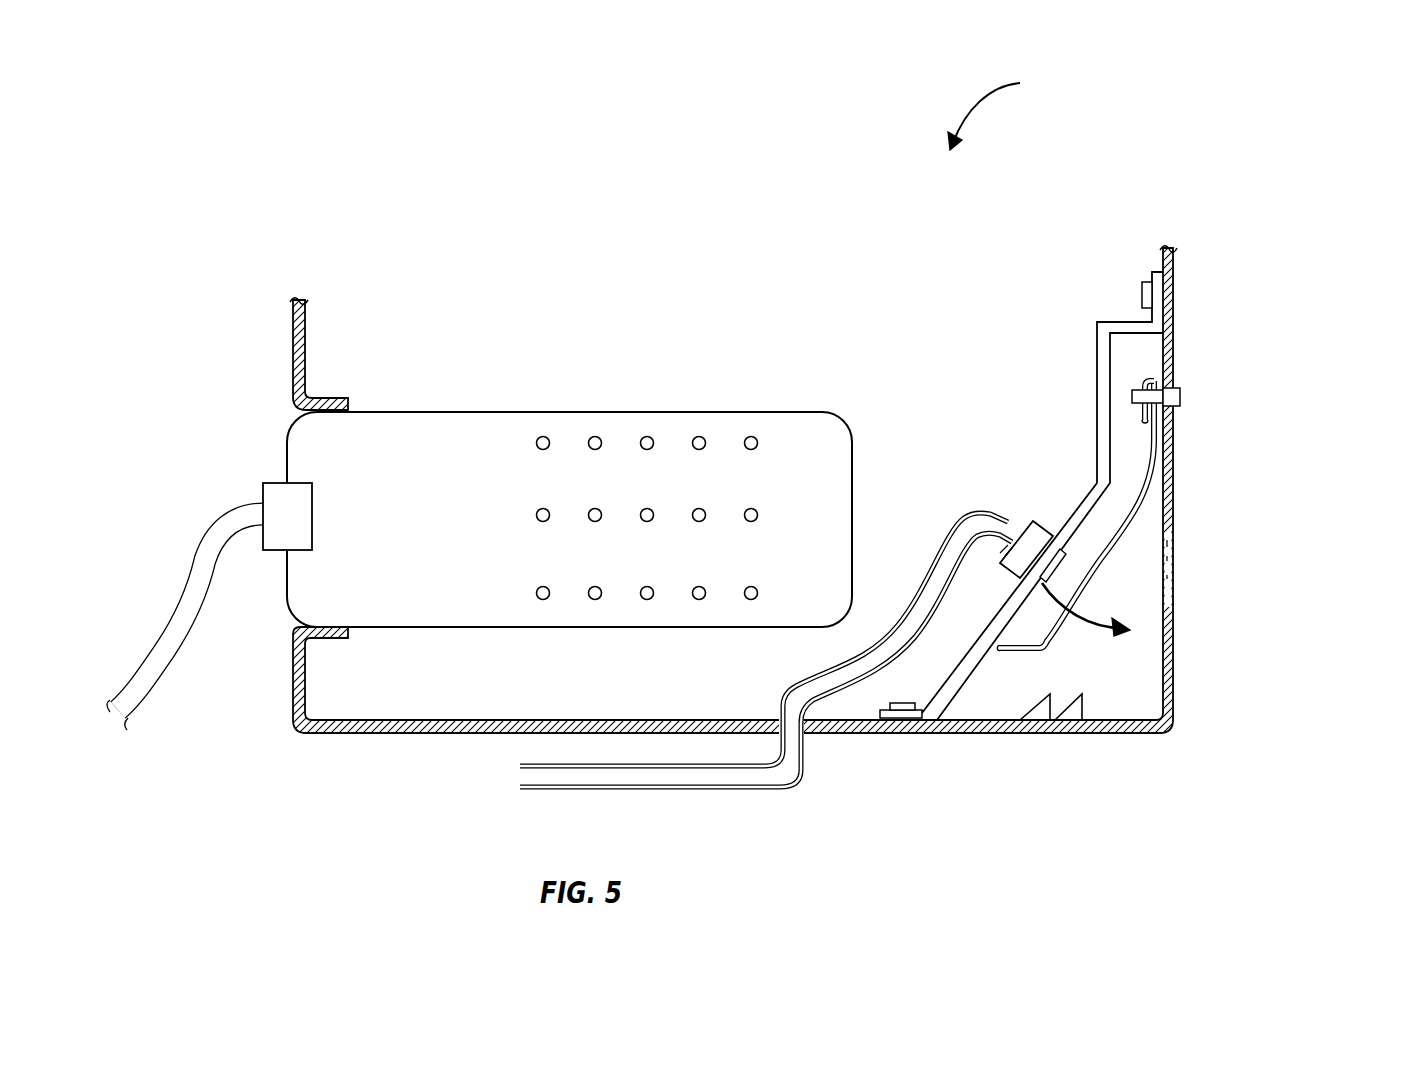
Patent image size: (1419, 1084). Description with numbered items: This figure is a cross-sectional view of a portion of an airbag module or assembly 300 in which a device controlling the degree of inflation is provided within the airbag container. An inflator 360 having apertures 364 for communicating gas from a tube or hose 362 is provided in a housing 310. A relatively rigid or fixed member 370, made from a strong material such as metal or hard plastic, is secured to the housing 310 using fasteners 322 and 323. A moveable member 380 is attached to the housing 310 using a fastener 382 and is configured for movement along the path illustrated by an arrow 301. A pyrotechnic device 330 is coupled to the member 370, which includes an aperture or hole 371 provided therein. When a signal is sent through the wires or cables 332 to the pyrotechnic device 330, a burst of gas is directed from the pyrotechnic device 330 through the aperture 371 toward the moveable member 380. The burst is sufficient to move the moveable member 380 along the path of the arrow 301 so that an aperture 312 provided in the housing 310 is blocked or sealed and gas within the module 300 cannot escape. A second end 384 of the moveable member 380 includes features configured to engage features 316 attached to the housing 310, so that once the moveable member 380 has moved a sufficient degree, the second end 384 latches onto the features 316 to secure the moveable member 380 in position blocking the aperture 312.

The airbag module or assembly 300 is at (1005, 108).
The arrow 301 is at (1082, 617).
The housing 310 is at (306, 330).
The aperture 312 is at (1168, 580).
The features 316 is at (1082, 706).
The fastener 322 is at (1140, 295).
The fastener 323 is at (908, 695).
The pyrotechnic device 330 is at (1040, 520).
The wires or cables 332 is at (933, 563).
The inflator 360 is at (515, 418).
The tube or hose 362 is at (172, 672).
The apertures 364 is at (536, 593).
The member or element 370 is at (1097, 350).
The aperture or hole 371 is at (1052, 562).
The moveable member or element 380 is at (1160, 450).
The fastener 382 is at (1178, 394).
The second end 384 is at (1015, 652).